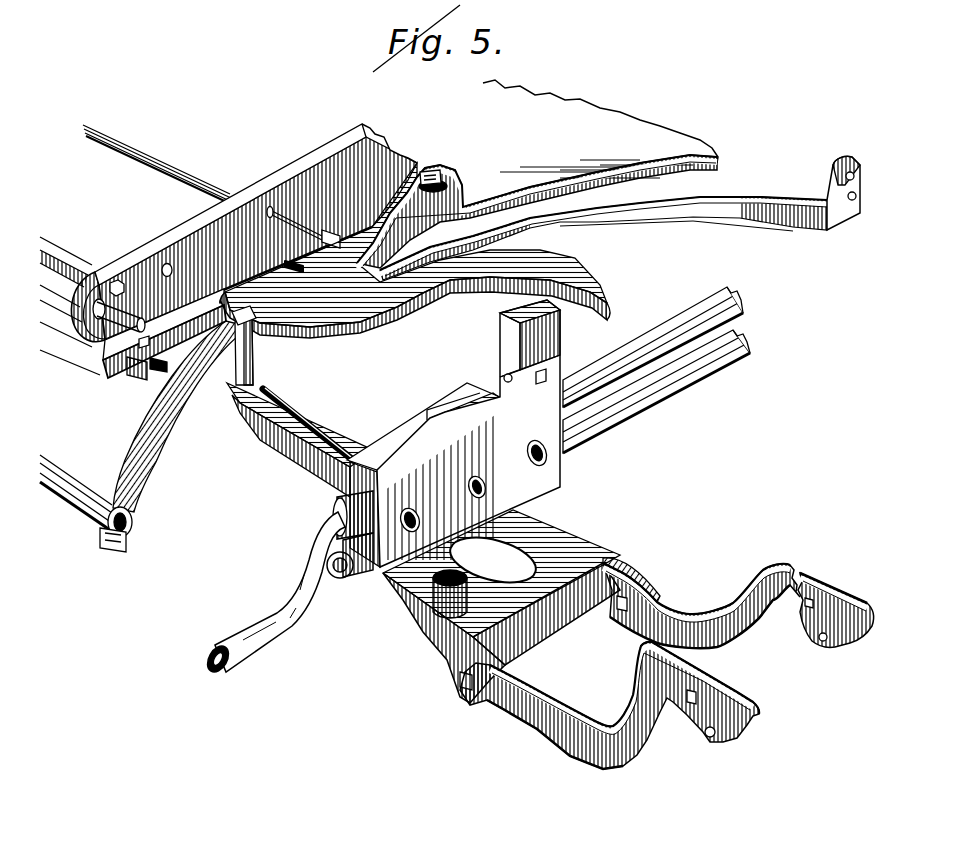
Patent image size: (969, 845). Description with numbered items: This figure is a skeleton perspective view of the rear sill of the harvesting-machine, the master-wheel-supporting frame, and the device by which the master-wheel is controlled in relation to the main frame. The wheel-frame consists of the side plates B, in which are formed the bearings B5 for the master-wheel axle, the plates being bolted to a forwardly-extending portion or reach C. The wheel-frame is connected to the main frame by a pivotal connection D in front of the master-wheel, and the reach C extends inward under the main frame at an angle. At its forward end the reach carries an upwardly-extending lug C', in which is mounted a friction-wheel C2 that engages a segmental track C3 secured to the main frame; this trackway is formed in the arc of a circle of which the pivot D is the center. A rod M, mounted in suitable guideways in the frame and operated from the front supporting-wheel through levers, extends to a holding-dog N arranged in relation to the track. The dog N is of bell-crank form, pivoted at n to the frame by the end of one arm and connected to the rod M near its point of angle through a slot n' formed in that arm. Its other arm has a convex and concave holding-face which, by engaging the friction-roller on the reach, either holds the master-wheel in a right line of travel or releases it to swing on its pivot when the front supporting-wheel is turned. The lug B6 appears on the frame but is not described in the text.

The rod M is at (183, 172).
The pivot n is at (436, 164).
The slot n' is at (308, 273).
The holding-dog N is at (411, 314).
The forwardly-extending portion or reach C is at (488, 462).
The upwardly-extending lug C' is at (265, 345).
The friction-wheel C2 is at (244, 252).
The segmental track C3 is at (155, 423).
The pivotal connection D is at (398, 636).
The side plates B is at (591, 663).
The bearings B5 is at (836, 625).
The bracket lug B6 is at (705, 731).